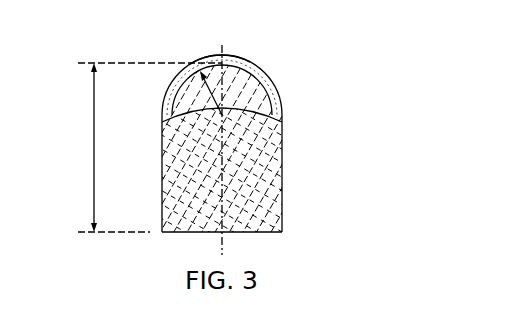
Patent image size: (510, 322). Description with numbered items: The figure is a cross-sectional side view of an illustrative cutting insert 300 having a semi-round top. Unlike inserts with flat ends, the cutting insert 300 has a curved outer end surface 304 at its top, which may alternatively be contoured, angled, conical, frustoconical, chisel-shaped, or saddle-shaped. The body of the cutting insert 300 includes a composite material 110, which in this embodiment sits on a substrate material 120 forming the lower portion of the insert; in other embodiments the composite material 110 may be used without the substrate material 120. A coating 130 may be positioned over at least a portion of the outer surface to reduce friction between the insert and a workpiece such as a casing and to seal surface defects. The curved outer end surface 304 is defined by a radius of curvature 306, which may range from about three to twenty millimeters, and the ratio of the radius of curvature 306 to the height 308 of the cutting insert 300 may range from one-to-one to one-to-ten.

The cutting insert 300 is at (248, 145).
The composite material 110 is at (268, 90).
The substrate material 120 is at (270, 177).
The coating 130 is at (208, 58).
The outer end surface 304 is at (233, 57).
The radius of curvature 306 is at (181, 99).
The height 308 is at (150, 147).